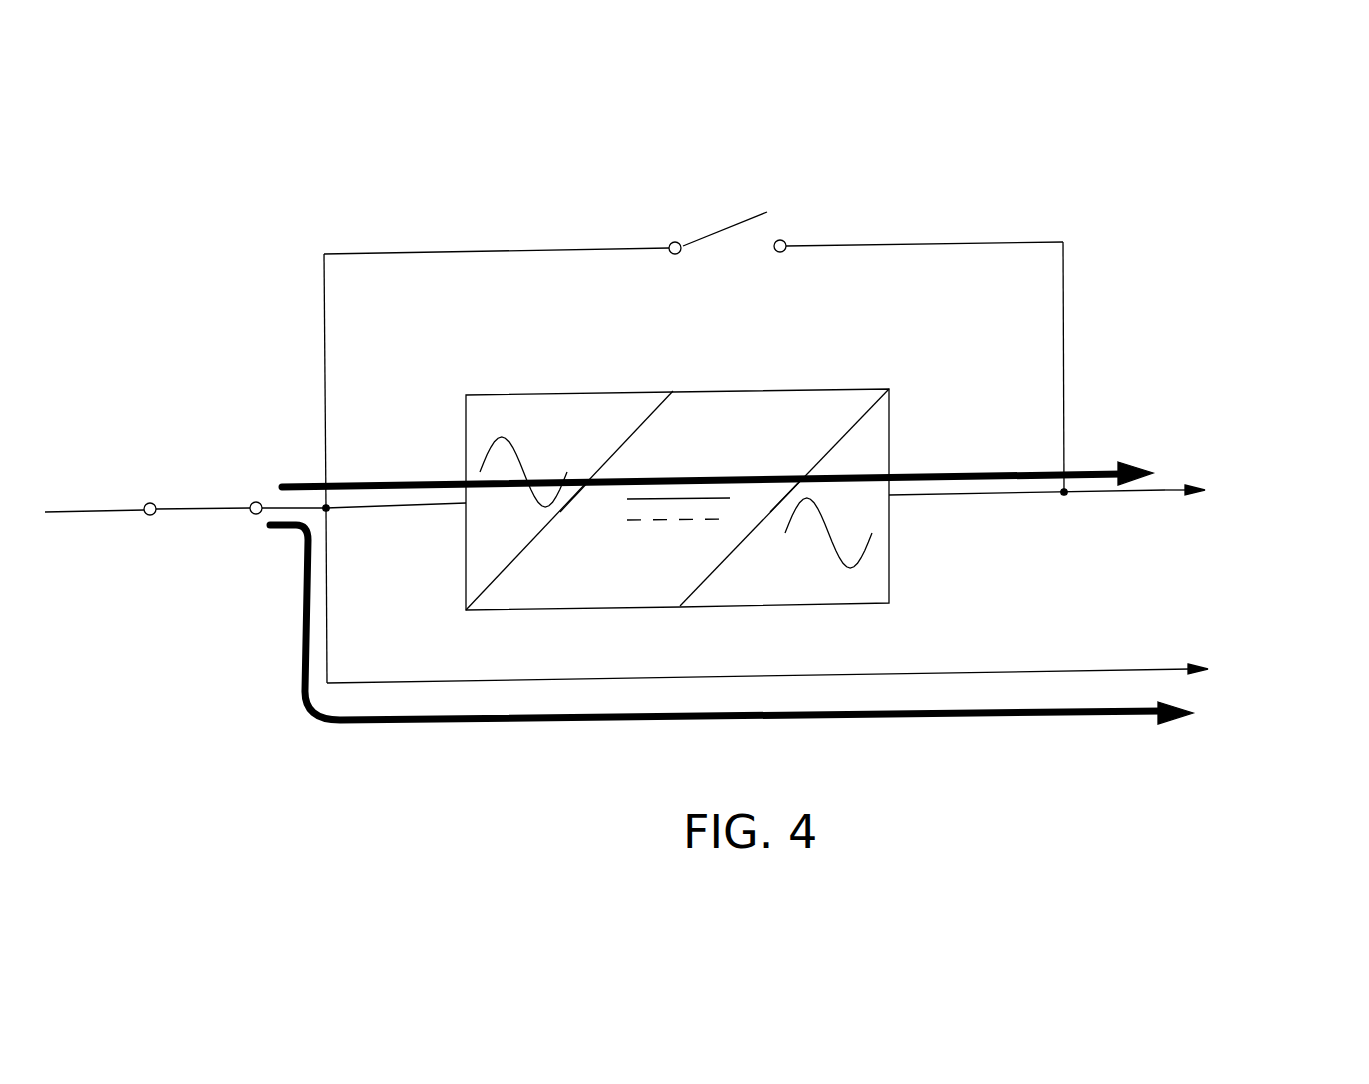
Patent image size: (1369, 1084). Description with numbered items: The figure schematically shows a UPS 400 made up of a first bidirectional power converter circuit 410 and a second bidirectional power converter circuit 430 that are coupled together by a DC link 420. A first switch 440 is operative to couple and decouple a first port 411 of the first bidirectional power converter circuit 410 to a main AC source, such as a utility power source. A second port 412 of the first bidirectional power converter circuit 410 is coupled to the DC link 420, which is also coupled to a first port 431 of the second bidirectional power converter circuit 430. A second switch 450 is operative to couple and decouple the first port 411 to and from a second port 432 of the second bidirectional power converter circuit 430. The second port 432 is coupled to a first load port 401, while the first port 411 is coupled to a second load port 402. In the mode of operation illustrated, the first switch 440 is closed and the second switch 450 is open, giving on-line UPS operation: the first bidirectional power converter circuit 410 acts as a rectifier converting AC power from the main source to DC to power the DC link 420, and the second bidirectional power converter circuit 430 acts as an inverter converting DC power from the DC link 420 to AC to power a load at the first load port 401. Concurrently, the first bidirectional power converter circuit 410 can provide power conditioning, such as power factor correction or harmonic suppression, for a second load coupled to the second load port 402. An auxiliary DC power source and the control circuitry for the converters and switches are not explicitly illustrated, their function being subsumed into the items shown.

The UPS 400 is at (1152, 203).
The first load port 401 is at (1165, 490).
The second load port 402 is at (1158, 671).
The first bidirectional power converter circuit 410 is at (592, 422).
The first port of the first bidirectional power converter circuit 411 is at (448, 450).
The second port of the first bidirectional power converter circuit 412 is at (575, 507).
The DC link 420 is at (700, 466).
The second bidirectional power converter circuit 430 is at (807, 600).
The first port of the second bidirectional power converter circuit 431 is at (782, 495).
The second port of the second bidirectional power converter circuit 432 is at (908, 458).
The first switch 440 is at (185, 453).
The second switch 450 is at (692, 218).